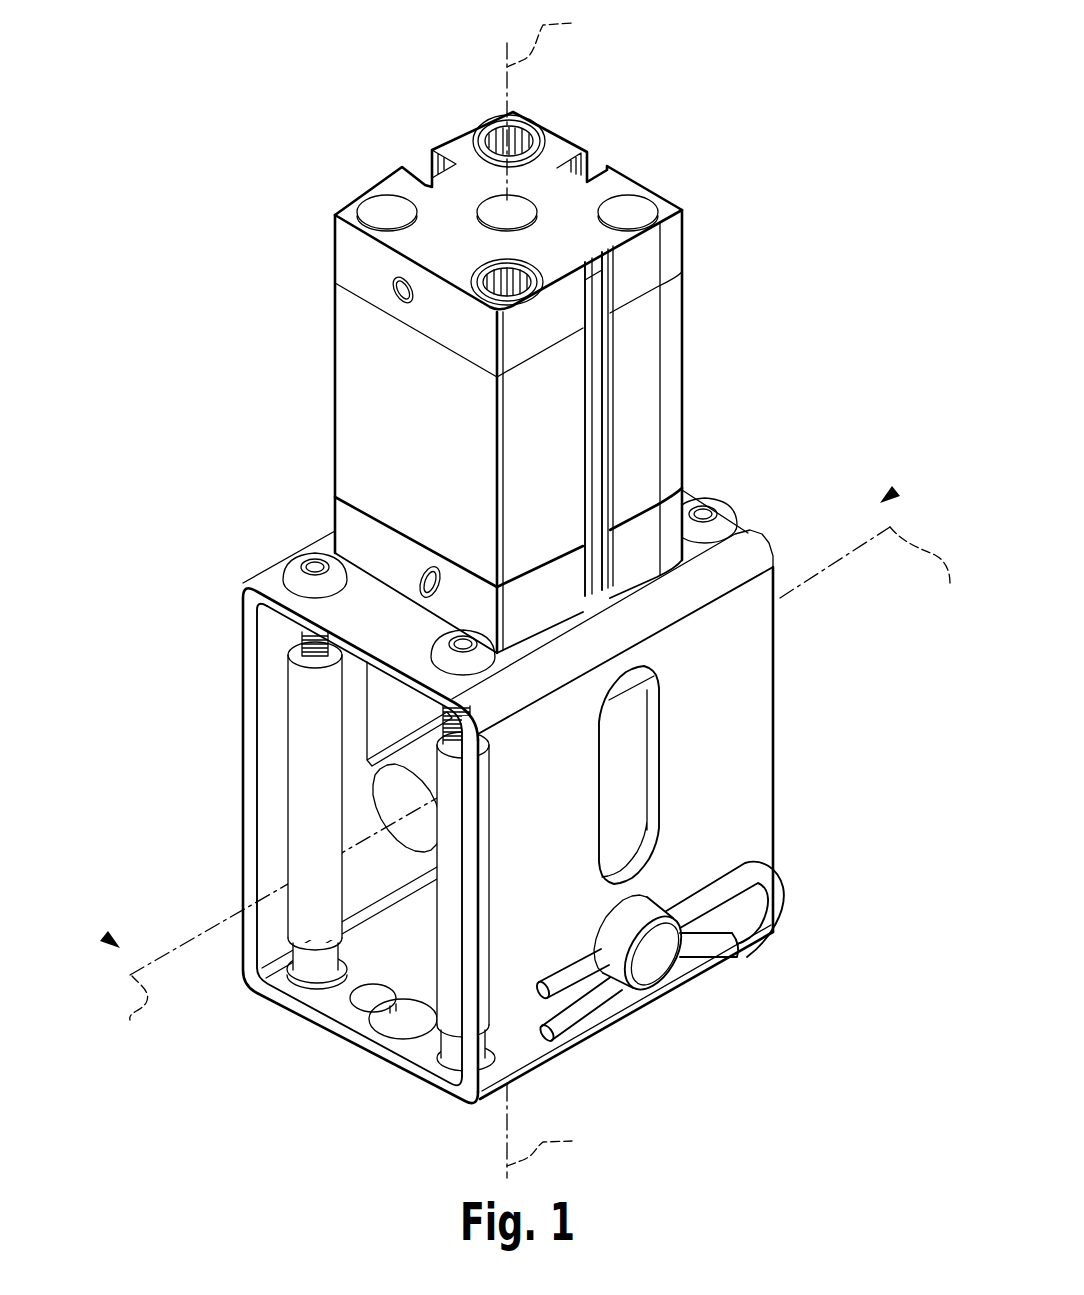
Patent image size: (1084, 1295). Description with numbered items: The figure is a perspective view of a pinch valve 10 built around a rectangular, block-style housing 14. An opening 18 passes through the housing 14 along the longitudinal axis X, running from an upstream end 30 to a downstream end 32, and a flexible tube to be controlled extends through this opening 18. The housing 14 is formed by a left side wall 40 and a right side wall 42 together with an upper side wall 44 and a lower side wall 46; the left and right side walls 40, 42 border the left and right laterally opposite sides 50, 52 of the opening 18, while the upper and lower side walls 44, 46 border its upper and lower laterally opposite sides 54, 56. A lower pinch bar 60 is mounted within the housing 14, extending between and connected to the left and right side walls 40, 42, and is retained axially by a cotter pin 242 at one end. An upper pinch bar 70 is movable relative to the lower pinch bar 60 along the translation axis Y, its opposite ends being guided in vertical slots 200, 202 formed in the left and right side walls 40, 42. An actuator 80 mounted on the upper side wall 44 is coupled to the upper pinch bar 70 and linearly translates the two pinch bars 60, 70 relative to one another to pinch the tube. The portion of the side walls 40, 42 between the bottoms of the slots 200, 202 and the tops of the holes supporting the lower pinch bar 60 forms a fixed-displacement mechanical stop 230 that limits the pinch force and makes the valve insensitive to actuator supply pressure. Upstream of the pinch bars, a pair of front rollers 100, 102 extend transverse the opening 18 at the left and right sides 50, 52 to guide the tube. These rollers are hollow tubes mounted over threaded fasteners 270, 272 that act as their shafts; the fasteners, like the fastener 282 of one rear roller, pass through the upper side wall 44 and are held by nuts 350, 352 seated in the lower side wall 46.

The pinch valve 10 is at (503, 590).
The housing 14 is at (225, 689).
The opening 18 is at (340, 880).
The upstream end 30 is at (104, 937).
The downstream end 32 is at (896, 492).
The left side wall 40 is at (496, 847).
The right side wall 42 is at (470, 867).
The upper side wall 44 is at (390, 680).
The lower side wall 46 is at (347, 1037).
The left laterally opposite side 50 is at (250, 815).
The right laterally opposite side 52 is at (433, 924).
The upper laterally opposite side 54 is at (363, 652).
The lower laterally opposite side 56 is at (318, 1012).
The lower pinch bar 60 is at (650, 960).
The upper pinch bar 70 is at (637, 717).
The actuator 80 is at (340, 331).
The left front roller 100 is at (300, 833).
The right front roller 102 is at (447, 985).
The vertical slot 200 is at (387, 747).
The vertical slot 202 is at (652, 785).
The mechanical stop 230 is at (657, 882).
The cotter pin 242 is at (757, 935).
The threaded fastener 270 is at (287, 642).
The threaded fastener 272 is at (440, 752).
The threaded fastener 282 is at (722, 515).
The nut 350 is at (303, 963).
The nut 352 is at (453, 1050).